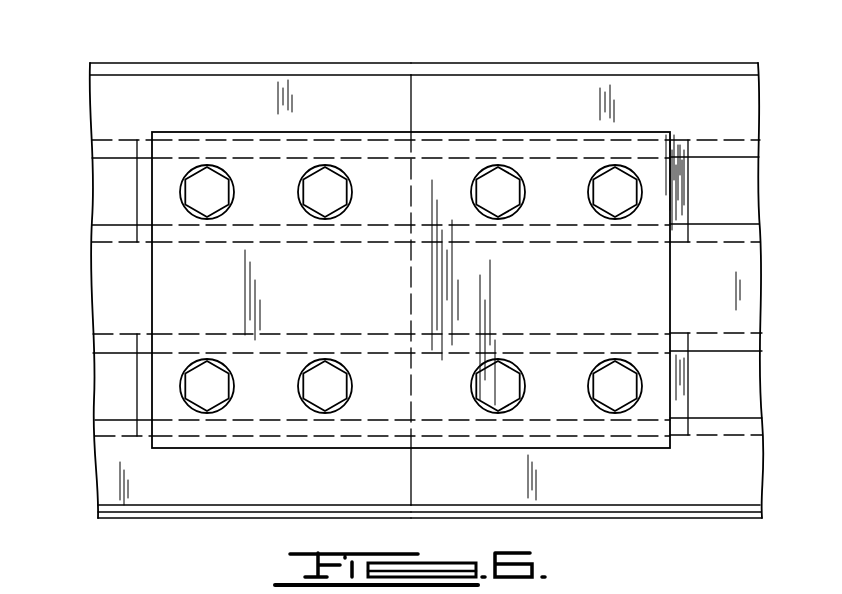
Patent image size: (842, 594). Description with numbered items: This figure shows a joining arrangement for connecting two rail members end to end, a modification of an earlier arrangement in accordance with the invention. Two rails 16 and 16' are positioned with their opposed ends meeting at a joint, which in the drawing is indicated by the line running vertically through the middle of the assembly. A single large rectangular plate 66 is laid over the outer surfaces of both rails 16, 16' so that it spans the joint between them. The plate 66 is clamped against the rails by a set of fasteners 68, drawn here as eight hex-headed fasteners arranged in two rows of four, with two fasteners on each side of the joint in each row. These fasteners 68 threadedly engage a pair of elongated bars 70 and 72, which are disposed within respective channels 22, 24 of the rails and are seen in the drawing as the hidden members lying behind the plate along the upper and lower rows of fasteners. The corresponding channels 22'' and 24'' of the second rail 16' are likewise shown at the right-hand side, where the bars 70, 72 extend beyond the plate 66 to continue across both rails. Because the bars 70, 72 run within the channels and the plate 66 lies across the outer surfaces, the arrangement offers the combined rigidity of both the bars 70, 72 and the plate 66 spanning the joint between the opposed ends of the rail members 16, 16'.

The rail 16 is at (274, 271).
The rail 16' is at (587, 271).
The channel 22 is at (355, 191).
The upper flange of second beam 22'' is at (737, 191).
The channel 24 is at (355, 385).
The lower flange of second beam 24'' is at (739, 384).
The rectangular plate 66 is at (162, 295).
The fasteners 68 is at (310, 197).
The elongated bar 70 is at (683, 173).
The elongated bar 72 is at (683, 370).